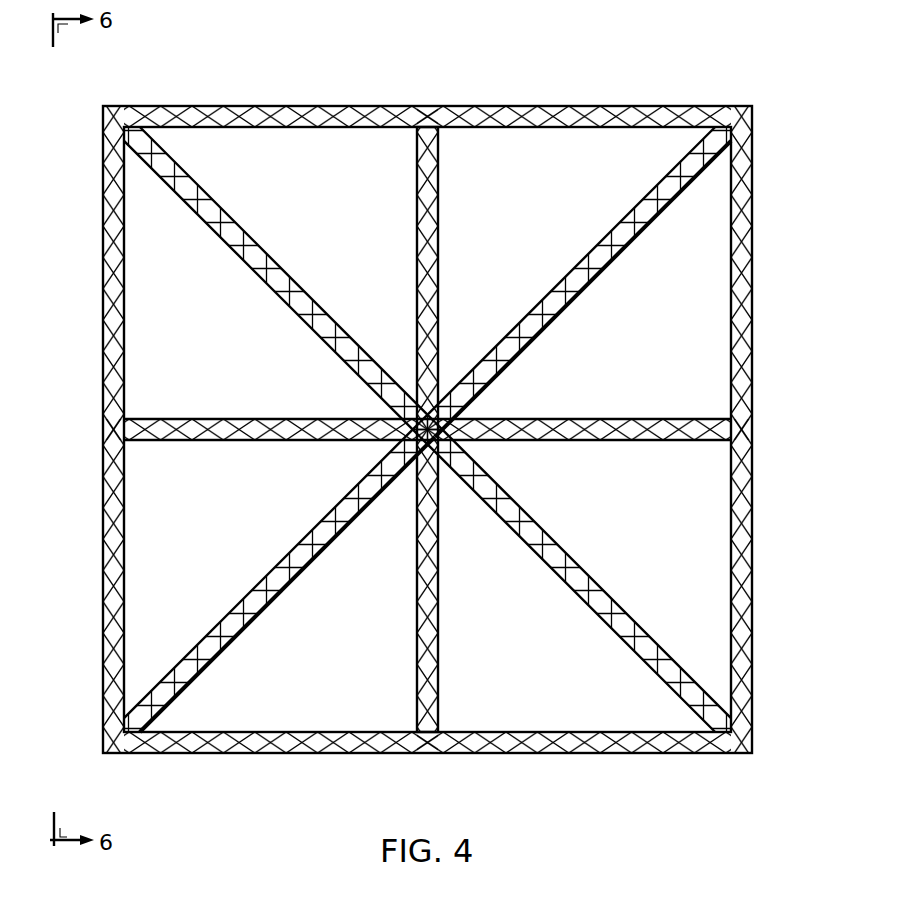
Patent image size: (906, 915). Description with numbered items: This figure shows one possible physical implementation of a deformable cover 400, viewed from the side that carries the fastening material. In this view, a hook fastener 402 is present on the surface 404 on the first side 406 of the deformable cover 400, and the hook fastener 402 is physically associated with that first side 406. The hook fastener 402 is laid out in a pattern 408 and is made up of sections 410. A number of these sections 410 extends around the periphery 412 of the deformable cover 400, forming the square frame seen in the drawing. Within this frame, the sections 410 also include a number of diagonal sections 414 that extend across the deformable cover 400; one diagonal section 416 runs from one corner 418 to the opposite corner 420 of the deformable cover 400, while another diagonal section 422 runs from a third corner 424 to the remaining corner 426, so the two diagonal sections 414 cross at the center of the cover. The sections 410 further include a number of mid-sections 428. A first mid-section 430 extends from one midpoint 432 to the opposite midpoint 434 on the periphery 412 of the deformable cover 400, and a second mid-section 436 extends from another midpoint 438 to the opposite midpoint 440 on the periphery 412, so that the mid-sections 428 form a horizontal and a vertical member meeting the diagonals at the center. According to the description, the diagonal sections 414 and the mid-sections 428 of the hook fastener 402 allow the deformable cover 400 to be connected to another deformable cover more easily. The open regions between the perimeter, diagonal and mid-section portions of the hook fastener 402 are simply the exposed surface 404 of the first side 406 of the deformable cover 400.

The deformable cover 400 is at (266, 72).
The hook fastener 402 is at (583, 113).
The surface 404 is at (507, 659).
The first side 406 is at (287, 746).
The pattern 408 is at (585, 760).
The sections 410 is at (93, 257).
The periphery 412 is at (752, 278).
The diagonal sections 414 is at (606, 580).
The diagonal section 416 is at (272, 262).
The corner 418 is at (113, 106).
The corner 420 is at (738, 755).
The diagonal section 422 is at (585, 262).
The corner 424 is at (113, 755).
The corner 426 is at (738, 106).
The mid-sections 428 is at (606, 411).
The mid-section 430 is at (256, 420).
The midpoint 432 is at (103, 430).
The midpoint 434 is at (752, 430).
The mid-section 436 is at (417, 600).
The midpoint 438 is at (428, 106).
The midpoint 440 is at (428, 755).